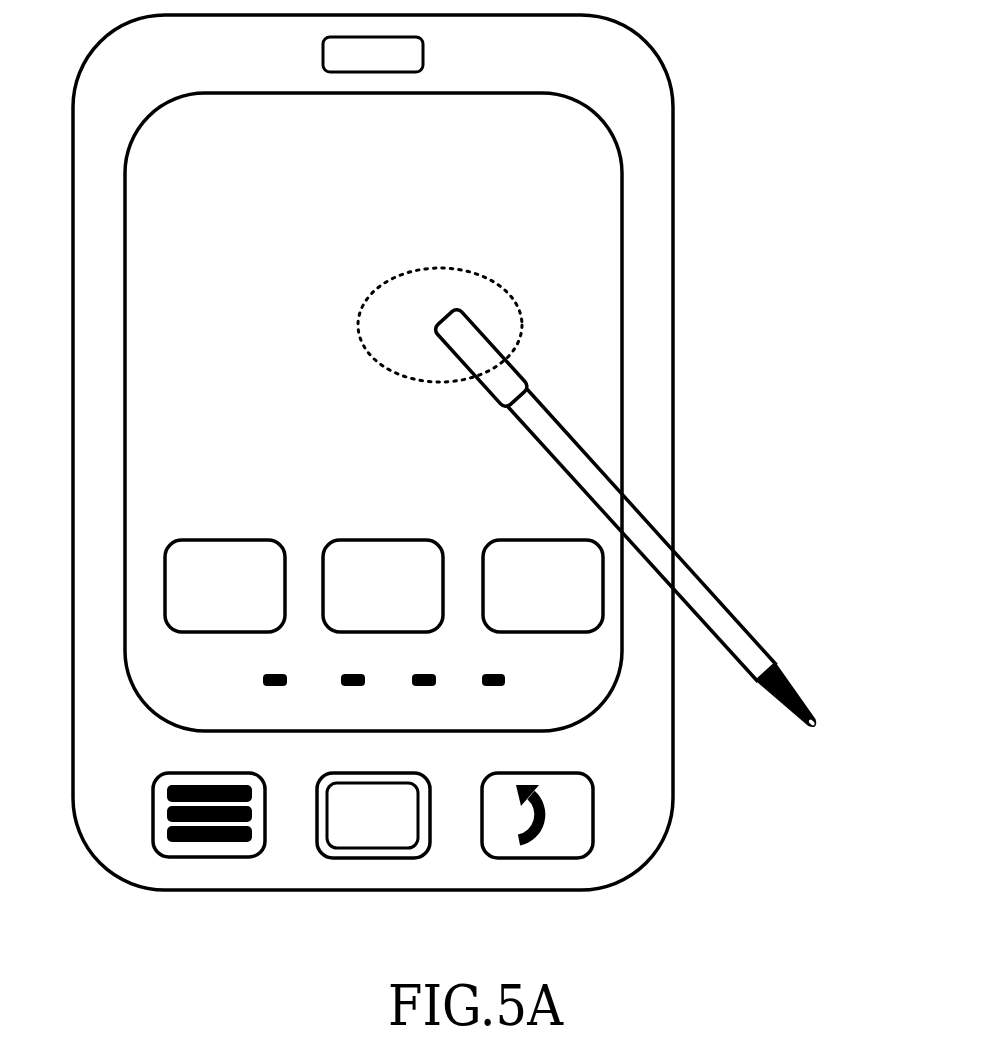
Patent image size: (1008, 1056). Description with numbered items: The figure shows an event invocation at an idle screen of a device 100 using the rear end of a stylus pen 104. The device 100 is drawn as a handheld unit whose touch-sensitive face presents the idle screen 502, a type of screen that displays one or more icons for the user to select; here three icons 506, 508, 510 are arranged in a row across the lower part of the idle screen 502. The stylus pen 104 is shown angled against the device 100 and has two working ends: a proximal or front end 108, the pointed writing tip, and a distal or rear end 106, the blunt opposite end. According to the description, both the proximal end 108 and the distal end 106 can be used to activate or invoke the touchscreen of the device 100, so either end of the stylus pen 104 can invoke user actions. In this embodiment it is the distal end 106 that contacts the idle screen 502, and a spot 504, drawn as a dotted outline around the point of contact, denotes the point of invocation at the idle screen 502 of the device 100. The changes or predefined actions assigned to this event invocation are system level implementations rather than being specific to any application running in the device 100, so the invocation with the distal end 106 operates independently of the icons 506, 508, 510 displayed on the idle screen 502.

The device 100 is at (712, 93).
The stylus pen 104 is at (622, 482).
The distal end 106 is at (513, 340).
The proximal end 108 is at (793, 687).
The idle screen 502 is at (405, 479).
The spot 504 is at (427, 318).
The icon 506 is at (248, 600).
The icon 508 is at (405, 600).
The icon 510 is at (567, 602).